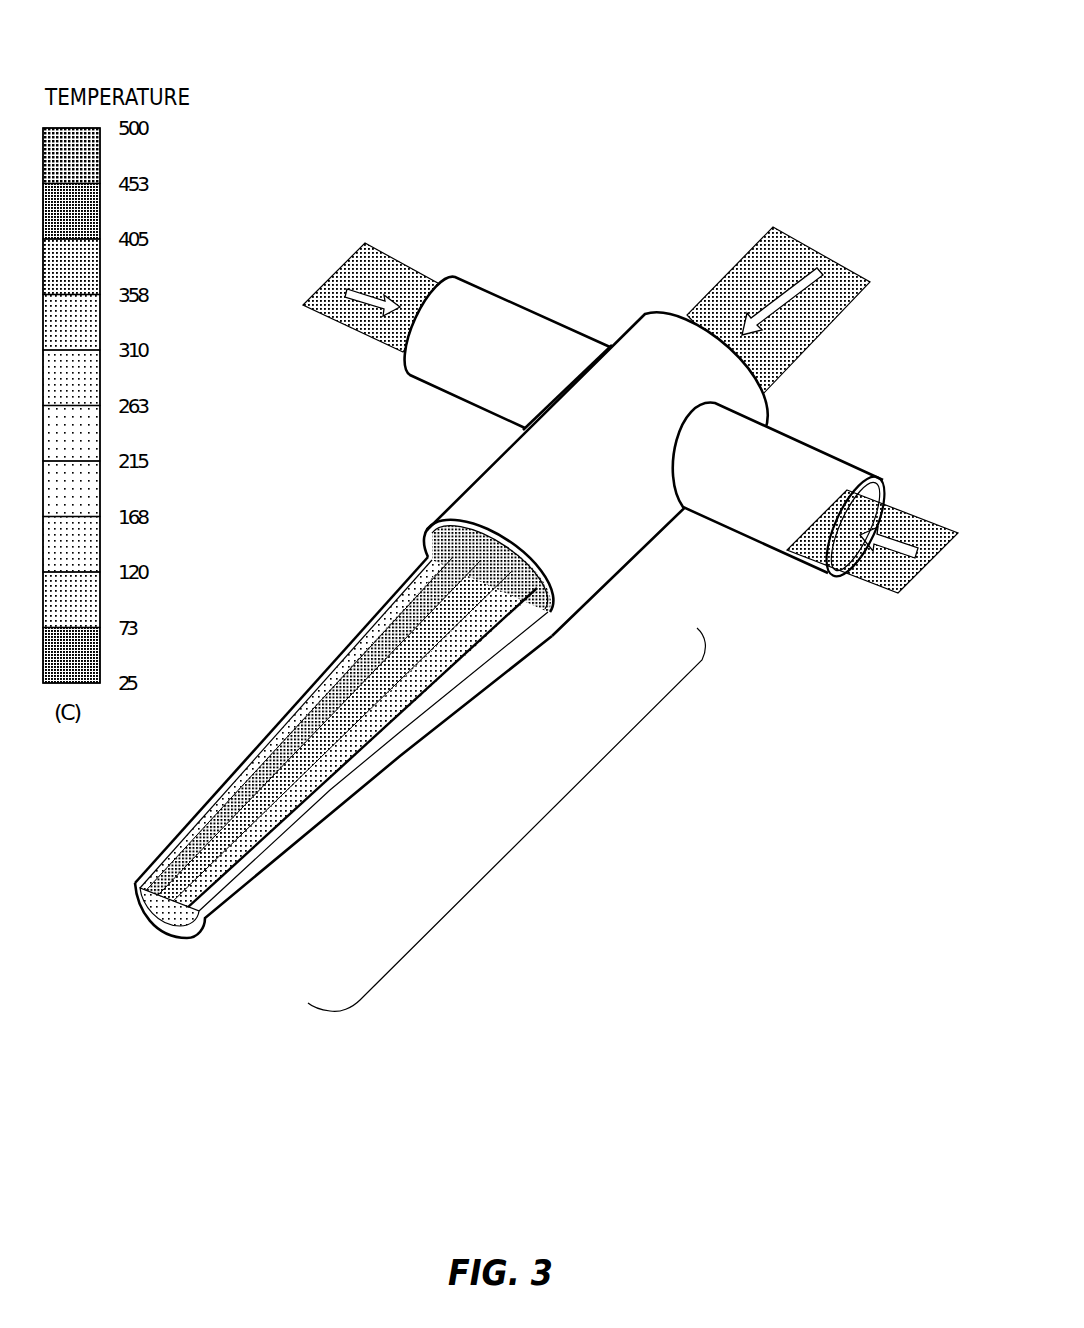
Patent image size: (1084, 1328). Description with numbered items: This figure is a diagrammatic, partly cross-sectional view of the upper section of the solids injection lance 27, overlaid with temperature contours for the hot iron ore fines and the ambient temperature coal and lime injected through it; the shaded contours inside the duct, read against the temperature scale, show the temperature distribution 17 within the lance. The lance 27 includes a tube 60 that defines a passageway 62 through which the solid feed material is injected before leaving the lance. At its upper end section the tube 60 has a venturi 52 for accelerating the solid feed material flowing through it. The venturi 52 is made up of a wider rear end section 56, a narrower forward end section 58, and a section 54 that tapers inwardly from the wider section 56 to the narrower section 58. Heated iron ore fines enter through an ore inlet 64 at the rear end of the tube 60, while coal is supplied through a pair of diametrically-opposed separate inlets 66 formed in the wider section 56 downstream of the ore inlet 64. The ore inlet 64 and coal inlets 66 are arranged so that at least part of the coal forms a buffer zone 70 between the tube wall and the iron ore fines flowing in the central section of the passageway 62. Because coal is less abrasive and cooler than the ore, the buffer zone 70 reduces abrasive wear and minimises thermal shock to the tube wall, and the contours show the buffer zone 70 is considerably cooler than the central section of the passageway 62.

The exhaust gas flow 17 is at (340, 672).
The solids injection lance 27 is at (357, 110).
The venturi 52 is at (541, 860).
The tapering section 54 is at (423, 723).
The wider rear end section 56 is at (614, 567).
The narrower forward end section 58 is at (255, 877).
The tube 60 is at (334, 734).
The passageway 62 is at (180, 890).
The ore inlet 64 is at (681, 312).
The coal inlets 66 is at (423, 292).
The buffer zone 70 is at (292, 723).